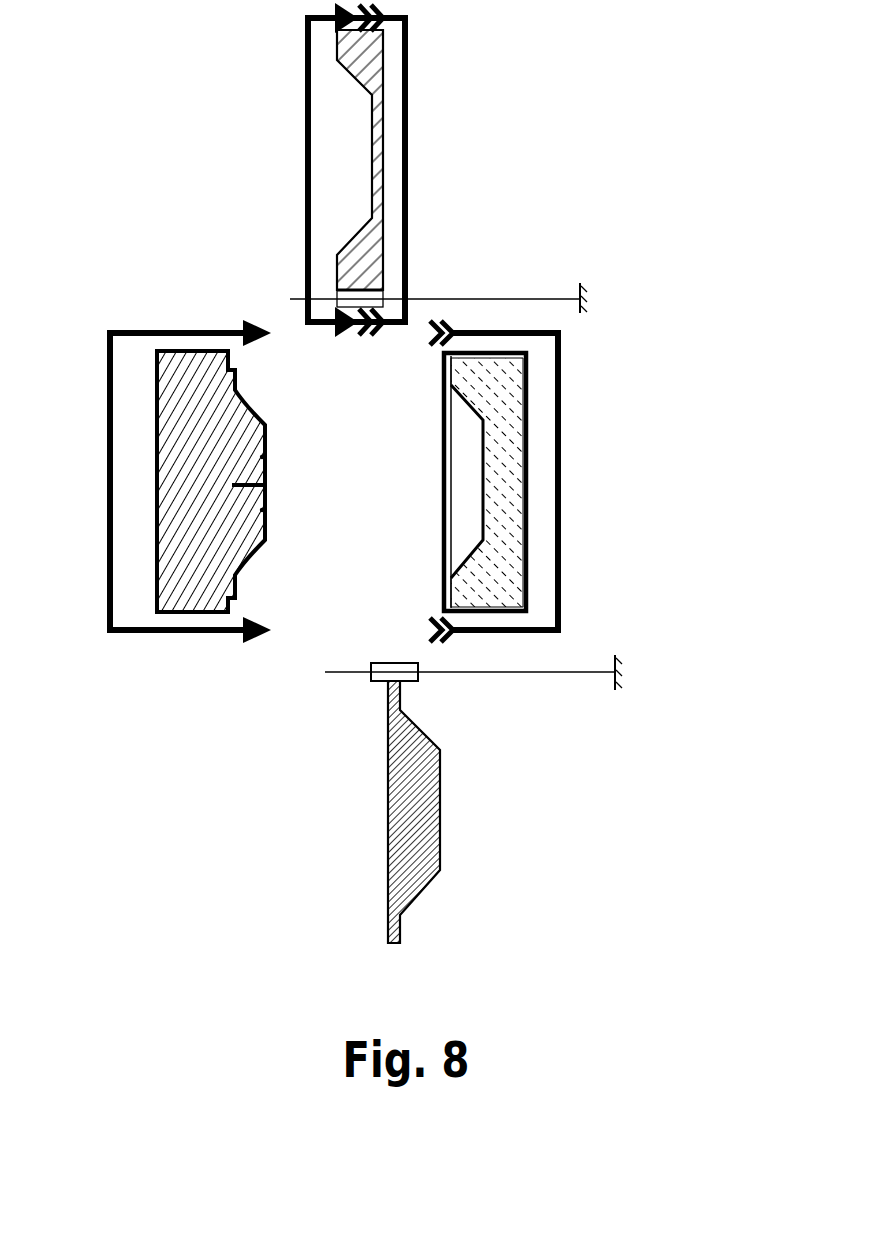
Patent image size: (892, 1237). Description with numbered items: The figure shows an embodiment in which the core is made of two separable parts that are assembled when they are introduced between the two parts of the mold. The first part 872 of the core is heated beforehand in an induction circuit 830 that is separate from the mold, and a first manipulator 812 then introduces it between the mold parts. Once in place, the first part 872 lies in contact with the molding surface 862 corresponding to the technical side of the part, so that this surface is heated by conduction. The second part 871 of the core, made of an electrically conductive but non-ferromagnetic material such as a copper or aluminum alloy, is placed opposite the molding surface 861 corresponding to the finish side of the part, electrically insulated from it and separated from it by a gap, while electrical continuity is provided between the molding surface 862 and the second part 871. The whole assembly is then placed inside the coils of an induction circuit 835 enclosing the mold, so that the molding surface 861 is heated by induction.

The induction circuit 830 is at (305, 170).
The first part of the core 872 is at (370, 45).
The first manipulator 812 is at (383, 276).
The molding surface corresponding to the technical side 862 is at (263, 418).
The molding surface corresponding to the finish side 861 is at (482, 473).
The induction circuit 835 is at (562, 463).
The second part of the core 871 is at (444, 795).